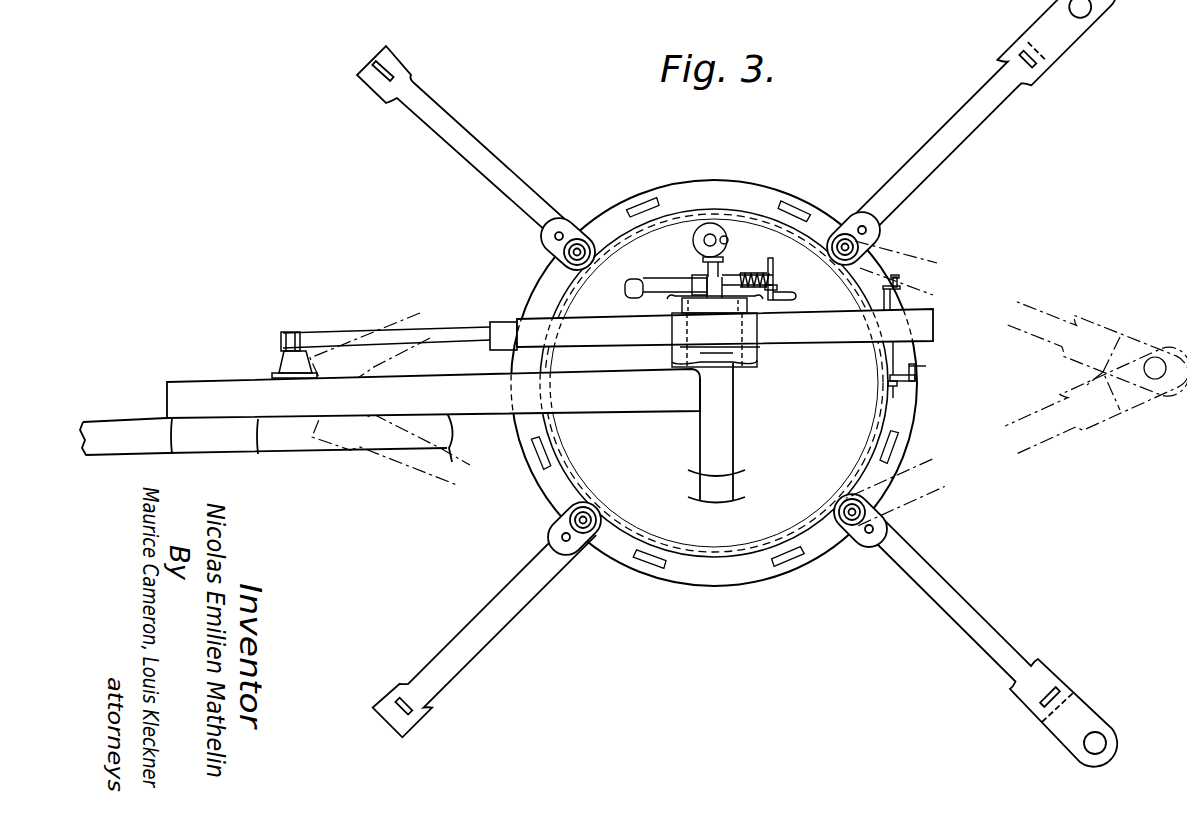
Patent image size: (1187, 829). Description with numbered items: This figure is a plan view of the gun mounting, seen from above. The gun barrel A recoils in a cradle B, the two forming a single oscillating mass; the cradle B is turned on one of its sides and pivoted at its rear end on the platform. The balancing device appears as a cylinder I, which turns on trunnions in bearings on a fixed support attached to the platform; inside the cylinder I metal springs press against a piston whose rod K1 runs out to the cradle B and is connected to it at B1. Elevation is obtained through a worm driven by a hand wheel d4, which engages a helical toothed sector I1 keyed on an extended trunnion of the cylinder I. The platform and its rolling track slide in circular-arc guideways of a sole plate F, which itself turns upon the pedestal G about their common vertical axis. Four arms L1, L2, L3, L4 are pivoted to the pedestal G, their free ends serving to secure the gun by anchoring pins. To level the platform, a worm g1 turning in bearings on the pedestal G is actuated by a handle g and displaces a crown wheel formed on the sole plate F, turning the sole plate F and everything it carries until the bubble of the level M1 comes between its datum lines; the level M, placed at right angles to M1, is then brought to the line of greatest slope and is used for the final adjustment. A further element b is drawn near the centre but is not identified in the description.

The gun barrel A is at (125, 428).
The cradle B is at (195, 390).
The connection point on cradle B1 is at (290, 363).
The piston rod K1 is at (460, 335).
The cylinder I is at (597, 323).
The helical toothed sector I1 is at (753, 273).
The hand wheel d4 is at (782, 290).
The handle g is at (896, 282).
The level M1 is at (896, 372).
The level M is at (918, 373).
The worm g1 is at (897, 388).
The sole plate F is at (895, 412).
The pedestal G is at (720, 540).
The vertical pipe b is at (723, 437).
The arm L1 is at (502, 178).
The arm L2 is at (518, 592).
The arm L3 is at (960, 613).
The arm L4 is at (940, 163).